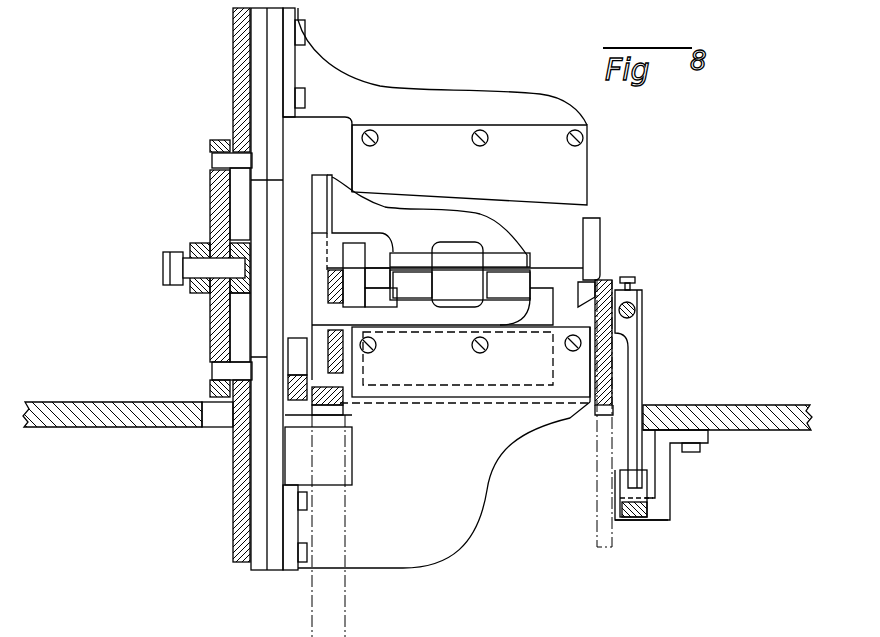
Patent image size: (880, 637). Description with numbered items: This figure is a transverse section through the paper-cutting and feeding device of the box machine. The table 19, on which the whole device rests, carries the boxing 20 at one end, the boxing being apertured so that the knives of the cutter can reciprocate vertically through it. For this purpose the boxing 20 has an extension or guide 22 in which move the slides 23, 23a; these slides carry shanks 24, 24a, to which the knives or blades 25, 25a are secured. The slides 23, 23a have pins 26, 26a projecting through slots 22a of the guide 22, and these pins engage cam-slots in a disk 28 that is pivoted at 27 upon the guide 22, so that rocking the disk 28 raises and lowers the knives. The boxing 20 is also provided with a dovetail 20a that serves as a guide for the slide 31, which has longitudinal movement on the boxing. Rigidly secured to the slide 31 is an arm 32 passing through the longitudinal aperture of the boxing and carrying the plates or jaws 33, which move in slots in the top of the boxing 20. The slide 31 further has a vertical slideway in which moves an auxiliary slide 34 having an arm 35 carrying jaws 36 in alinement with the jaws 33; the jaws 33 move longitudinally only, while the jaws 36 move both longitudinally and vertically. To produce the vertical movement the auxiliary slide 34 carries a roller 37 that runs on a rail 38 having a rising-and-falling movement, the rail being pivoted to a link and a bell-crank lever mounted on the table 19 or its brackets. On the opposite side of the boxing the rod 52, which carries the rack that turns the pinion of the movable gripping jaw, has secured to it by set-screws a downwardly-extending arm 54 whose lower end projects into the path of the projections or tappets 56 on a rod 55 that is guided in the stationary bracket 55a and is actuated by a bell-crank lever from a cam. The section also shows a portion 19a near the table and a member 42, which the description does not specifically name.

The table 19 is at (128, 418).
The table opening edge 19a is at (217, 420).
The boxing 20 is at (584, 316).
The dovetail 20a is at (352, 350).
The guide 22 is at (240, 66).
The slots 22a is at (243, 192).
The slide 23 is at (262, 80).
The slide 23a is at (268, 493).
The shank 24 is at (435, 100).
The shank 24a is at (444, 418).
The knife 25 is at (469, 165).
The knife 25a is at (465, 365).
The pin 26 is at (222, 160).
The pin 26a is at (222, 372).
The pivot 27 is at (202, 268).
The disk 28 is at (222, 222).
The slide 31 is at (325, 270).
The arm 32 is at (436, 284).
The jaws 33 is at (508, 286).
The auxiliary slide 34 is at (326, 212).
The arm 35 is at (427, 221).
The jaws 36 is at (500, 265).
The roller 37 is at (297, 340).
The rail 38 is at (302, 398).
The pad 42 is at (335, 410).
The rod 52 is at (636, 310).
The arm 54 is at (641, 393).
The rod 55 is at (640, 522).
The stationary bracket 55a is at (662, 474).
The tappets 56 is at (630, 497).